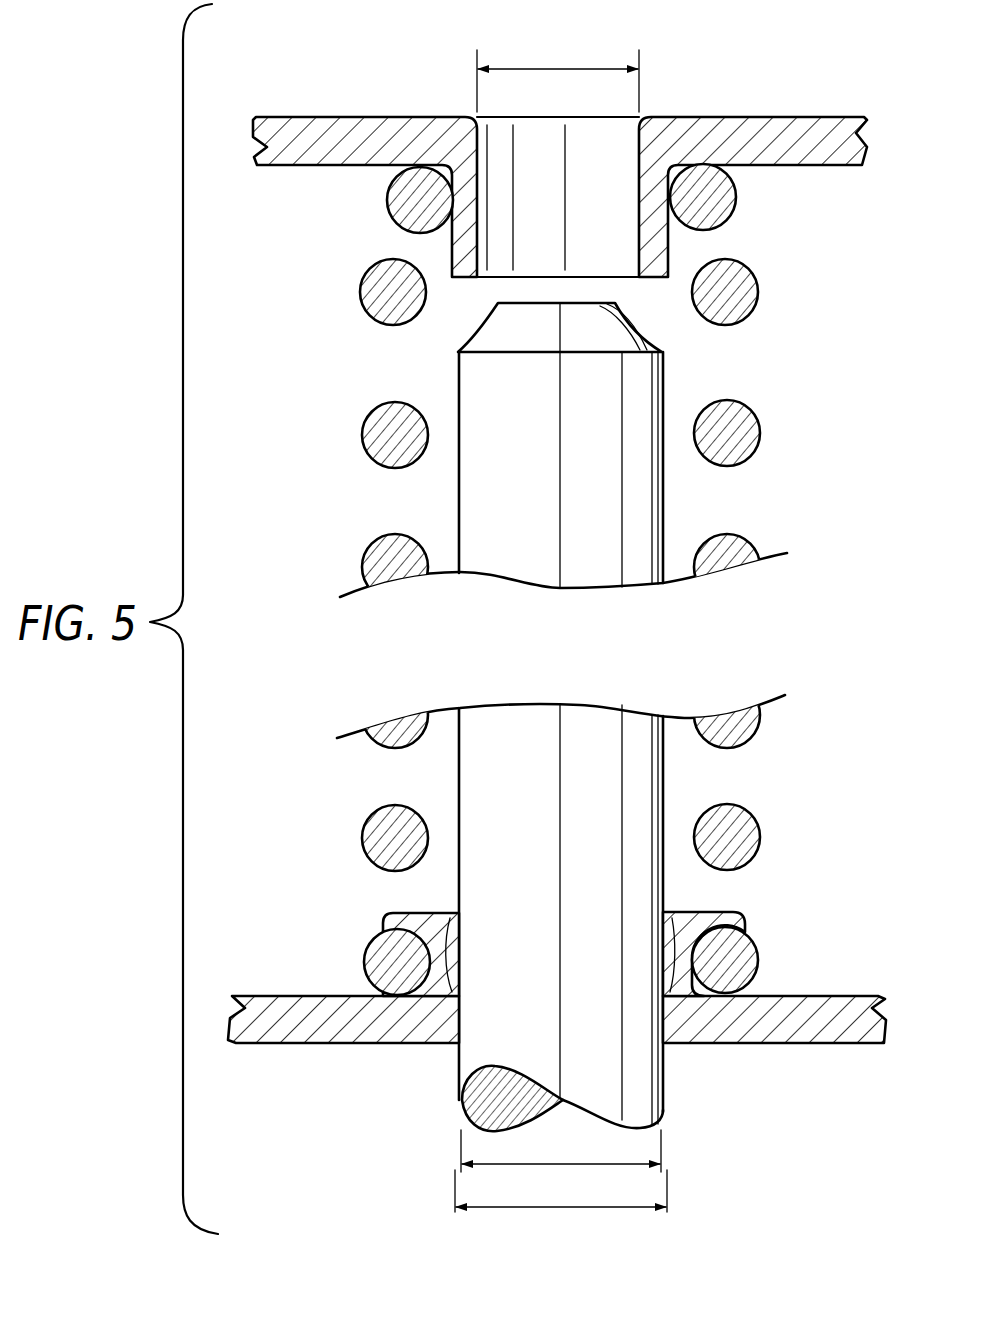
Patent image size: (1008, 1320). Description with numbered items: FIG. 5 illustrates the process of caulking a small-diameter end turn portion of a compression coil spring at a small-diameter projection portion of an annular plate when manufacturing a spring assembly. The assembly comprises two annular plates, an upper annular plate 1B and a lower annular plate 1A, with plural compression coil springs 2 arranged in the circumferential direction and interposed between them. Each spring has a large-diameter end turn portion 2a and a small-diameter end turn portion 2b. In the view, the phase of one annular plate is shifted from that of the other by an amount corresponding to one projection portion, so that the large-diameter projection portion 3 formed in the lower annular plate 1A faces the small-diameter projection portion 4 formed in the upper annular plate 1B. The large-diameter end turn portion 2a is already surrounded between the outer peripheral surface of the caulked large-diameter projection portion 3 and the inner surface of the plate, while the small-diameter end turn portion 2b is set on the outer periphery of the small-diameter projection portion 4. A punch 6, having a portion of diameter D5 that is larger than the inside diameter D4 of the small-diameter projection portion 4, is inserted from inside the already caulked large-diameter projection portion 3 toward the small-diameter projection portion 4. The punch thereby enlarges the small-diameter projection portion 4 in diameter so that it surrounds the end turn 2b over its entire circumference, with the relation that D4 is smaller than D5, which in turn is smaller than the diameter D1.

The annular plate 1A is at (262, 1008).
The annular plate 1B is at (293, 135).
The compression coil spring 2 is at (755, 730).
The end turn portion 2a is at (752, 960).
The small-diameter end turn portion 2b is at (718, 198).
The large-diameter projection portion 3 is at (765, 905).
The small-diameter projection portion 4 is at (627, 260).
The punch 6 is at (495, 498).
The inside diameter D4 is at (558, 73).
The portion diameter D5 is at (561, 1150).
The diameter D1 is at (561, 1191).